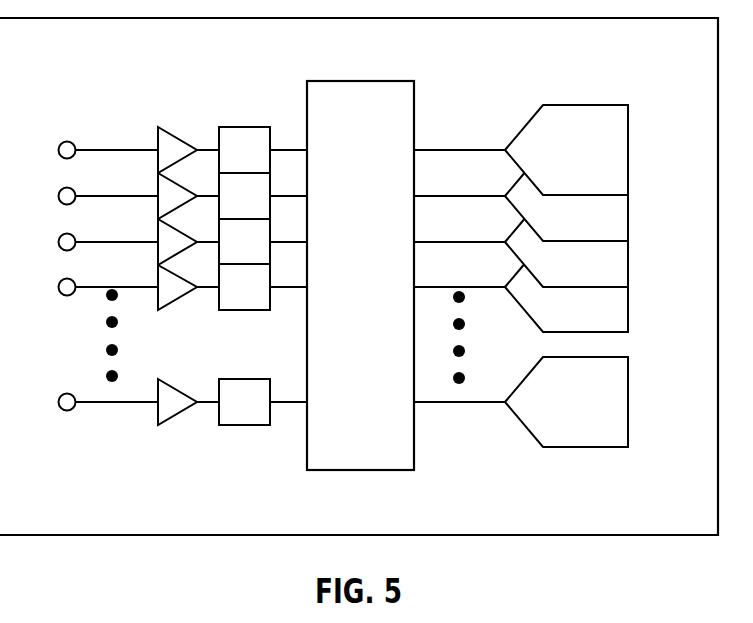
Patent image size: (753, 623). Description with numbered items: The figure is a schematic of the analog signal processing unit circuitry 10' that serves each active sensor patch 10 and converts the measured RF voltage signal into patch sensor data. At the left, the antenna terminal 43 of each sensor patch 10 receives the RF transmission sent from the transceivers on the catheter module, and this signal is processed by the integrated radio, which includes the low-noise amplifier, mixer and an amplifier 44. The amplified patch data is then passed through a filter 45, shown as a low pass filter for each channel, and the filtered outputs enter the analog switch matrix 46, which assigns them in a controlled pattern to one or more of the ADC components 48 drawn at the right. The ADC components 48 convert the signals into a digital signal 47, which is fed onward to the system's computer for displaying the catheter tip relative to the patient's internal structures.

The analog signal processing unit circuitry 10' is at (359, 276).
The sensor patch 10 is at (121, 219).
The antenna terminal 43 is at (58, 150).
The amplifier 44 is at (175, 133).
The filter 45 is at (243, 127).
The switch matrix 46 is at (406, 252).
The digital signal 47 is at (600, 249).
The ADC components 48 is at (566, 123).